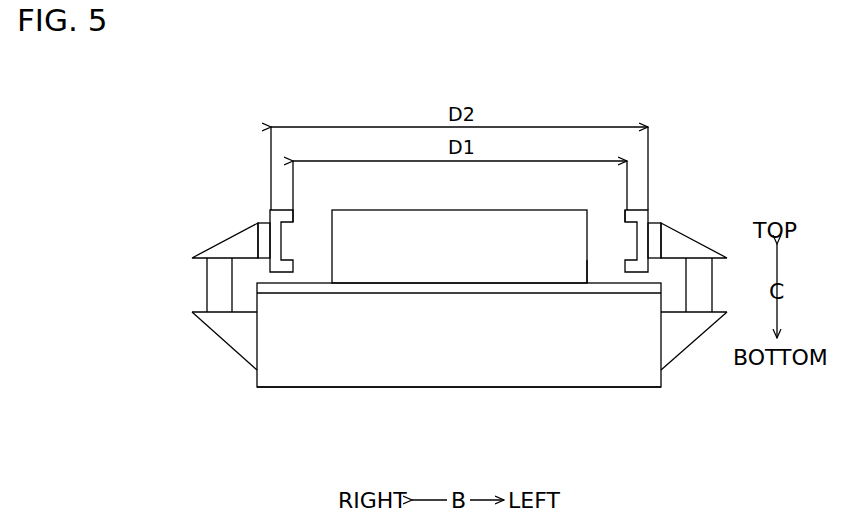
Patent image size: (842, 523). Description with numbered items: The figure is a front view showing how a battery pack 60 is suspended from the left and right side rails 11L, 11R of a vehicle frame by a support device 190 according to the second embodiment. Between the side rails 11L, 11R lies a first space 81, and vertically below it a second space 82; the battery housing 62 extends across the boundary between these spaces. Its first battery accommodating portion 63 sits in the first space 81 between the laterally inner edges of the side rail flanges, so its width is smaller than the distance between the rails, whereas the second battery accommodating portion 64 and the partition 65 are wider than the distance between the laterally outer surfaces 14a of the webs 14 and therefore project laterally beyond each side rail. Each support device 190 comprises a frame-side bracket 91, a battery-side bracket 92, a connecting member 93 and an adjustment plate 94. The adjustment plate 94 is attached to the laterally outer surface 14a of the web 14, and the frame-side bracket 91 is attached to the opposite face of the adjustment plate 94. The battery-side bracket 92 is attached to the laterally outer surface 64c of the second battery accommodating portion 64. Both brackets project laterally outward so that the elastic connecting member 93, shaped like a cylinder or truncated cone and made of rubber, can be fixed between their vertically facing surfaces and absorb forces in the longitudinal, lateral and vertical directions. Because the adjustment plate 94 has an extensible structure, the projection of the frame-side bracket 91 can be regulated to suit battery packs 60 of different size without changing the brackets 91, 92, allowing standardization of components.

The battery pack 60 is at (243, 433).
The battery housing 62 is at (375, 445).
The first battery accommodating portion 63 is at (378, 272).
The second battery accommodating portion 64 is at (337, 360).
The laterally outer surface of the second battery accommodating portion 64c is at (663, 373).
The partition 65 is at (312, 290).
The first space 81 is at (598, 270).
The second space 82 is at (672, 408).
The right side rail 11R is at (263, 208).
The left side rail 11L is at (657, 208).
The web 14 is at (650, 215).
The laterally outer surface of the web 14a is at (662, 225).
The support device 190 is at (193, 195).
The frame-side bracket 91 is at (230, 247).
The battery-side bracket 92 is at (230, 333).
The connecting member 93 is at (218, 282).
The adjustment plate 94 is at (254, 228).